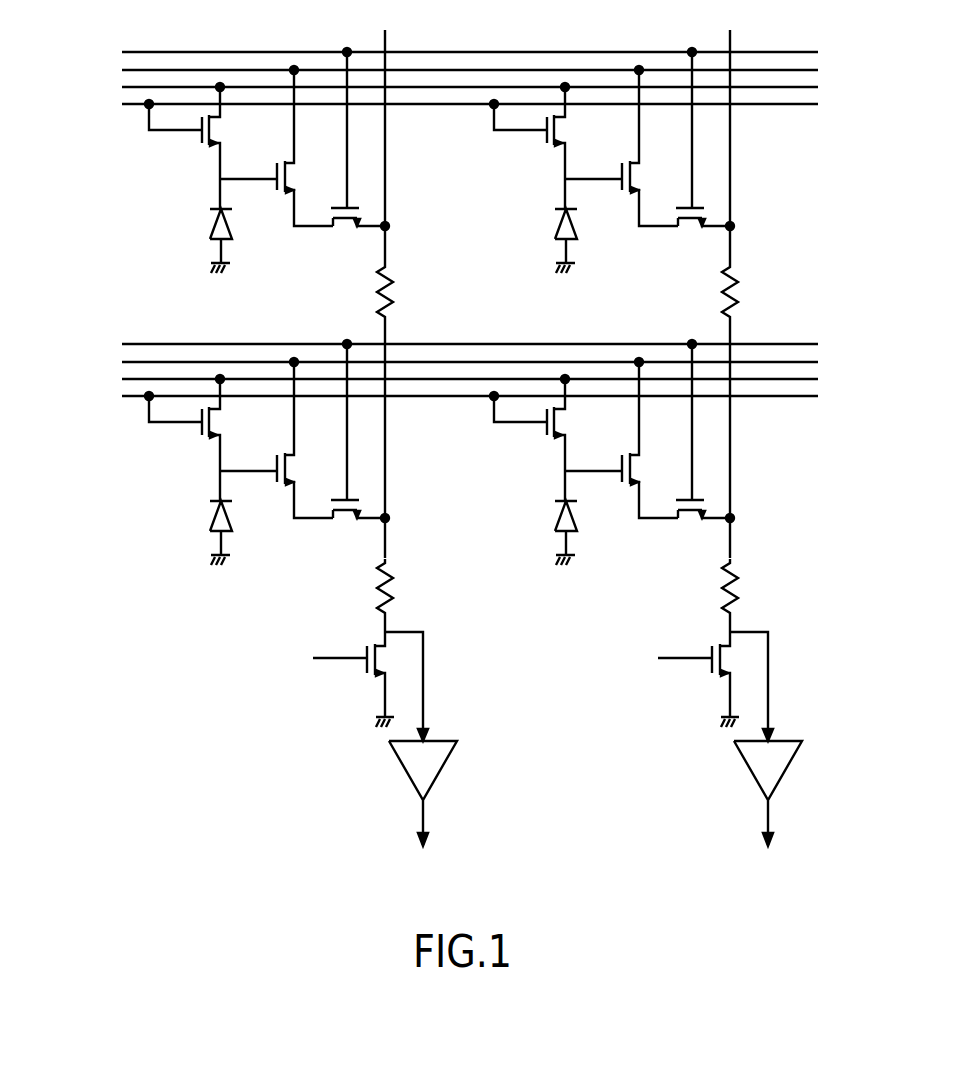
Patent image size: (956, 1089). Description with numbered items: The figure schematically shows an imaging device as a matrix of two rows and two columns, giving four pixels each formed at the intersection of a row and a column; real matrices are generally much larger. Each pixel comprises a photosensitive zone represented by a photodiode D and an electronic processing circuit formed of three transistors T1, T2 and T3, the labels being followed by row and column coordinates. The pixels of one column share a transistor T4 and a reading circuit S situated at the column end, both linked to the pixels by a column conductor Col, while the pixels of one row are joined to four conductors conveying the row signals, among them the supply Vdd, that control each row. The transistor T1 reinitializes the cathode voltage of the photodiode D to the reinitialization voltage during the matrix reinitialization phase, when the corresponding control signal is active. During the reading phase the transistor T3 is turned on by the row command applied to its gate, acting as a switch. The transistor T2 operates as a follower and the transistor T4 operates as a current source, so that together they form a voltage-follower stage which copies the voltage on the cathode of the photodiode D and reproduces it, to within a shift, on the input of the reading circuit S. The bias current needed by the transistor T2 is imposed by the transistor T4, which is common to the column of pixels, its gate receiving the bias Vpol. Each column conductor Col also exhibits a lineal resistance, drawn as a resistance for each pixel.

The transistor T1 is at (383, 292).
The transistor T2 is at (454, 292).
The transistor T3 is at (522, 298).
The transistor T4 is at (565, 679).
The photodiode D is at (362, 387).
The conductor Col is at (559, 316).
The reading circuit S is at (594, 739).
The bias voltage Vpol is at (512, 644).
The signal Vdd is at (449, 214).